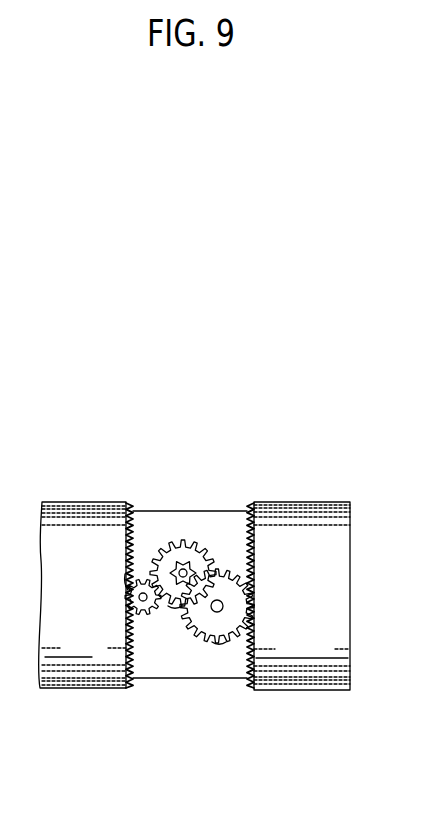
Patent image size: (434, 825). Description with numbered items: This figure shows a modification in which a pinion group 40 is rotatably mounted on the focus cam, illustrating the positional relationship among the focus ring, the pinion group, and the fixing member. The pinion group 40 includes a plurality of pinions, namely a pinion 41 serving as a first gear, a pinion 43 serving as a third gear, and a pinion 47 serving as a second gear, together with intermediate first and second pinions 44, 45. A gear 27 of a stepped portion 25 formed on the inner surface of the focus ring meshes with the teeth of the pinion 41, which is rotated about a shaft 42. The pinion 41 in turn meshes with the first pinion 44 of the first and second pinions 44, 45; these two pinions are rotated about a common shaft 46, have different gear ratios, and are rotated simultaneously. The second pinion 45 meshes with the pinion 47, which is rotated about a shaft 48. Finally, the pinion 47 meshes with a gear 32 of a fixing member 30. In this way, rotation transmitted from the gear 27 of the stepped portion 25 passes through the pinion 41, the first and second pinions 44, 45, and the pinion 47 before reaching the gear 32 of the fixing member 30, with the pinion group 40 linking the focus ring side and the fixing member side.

The stepped portion 25 is at (63, 502).
The gear 27 is at (128, 502).
The fixing member 30 is at (345, 502).
The gear 32 is at (247, 502).
The pinion group 40 is at (197, 691).
The pinion 41 is at (152, 612).
The shaft 42 is at (128, 581).
The pinion 43 is at (160, 545).
The first pinion 44 is at (172, 608).
The second pinion 45 is at (216, 562).
The shaft 46 is at (184, 569).
The pinion 47 is at (222, 643).
The shaft 48 is at (224, 606).